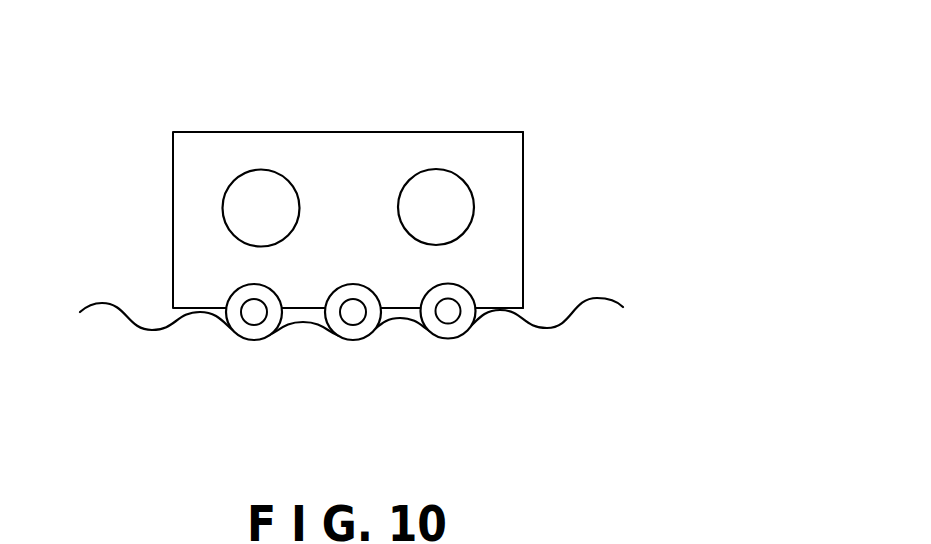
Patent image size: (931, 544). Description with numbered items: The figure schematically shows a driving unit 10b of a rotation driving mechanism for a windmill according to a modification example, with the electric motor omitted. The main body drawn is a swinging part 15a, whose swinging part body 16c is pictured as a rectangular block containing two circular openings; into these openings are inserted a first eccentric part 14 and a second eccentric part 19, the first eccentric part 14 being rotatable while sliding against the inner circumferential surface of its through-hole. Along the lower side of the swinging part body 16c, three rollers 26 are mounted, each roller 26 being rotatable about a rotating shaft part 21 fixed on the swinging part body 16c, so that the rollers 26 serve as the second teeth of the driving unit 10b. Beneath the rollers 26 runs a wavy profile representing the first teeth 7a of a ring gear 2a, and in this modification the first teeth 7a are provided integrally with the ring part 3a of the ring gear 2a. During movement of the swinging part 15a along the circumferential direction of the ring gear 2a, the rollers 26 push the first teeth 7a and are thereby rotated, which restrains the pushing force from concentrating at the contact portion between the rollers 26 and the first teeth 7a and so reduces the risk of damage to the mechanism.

The driving unit 10b is at (475, 80).
The swinging part 15a is at (523, 162).
The swinging part body 16c is at (508, 247).
The second eccentric part 19 is at (262, 185).
The first eccentric part 14 is at (430, 202).
The first teeth 7a is at (512, 322).
The rollers 26 is at (257, 330).
The rotating shaft part 21 is at (242, 327).
The ring gear 2a is at (582, 347).
The ring part 3a is at (525, 365).